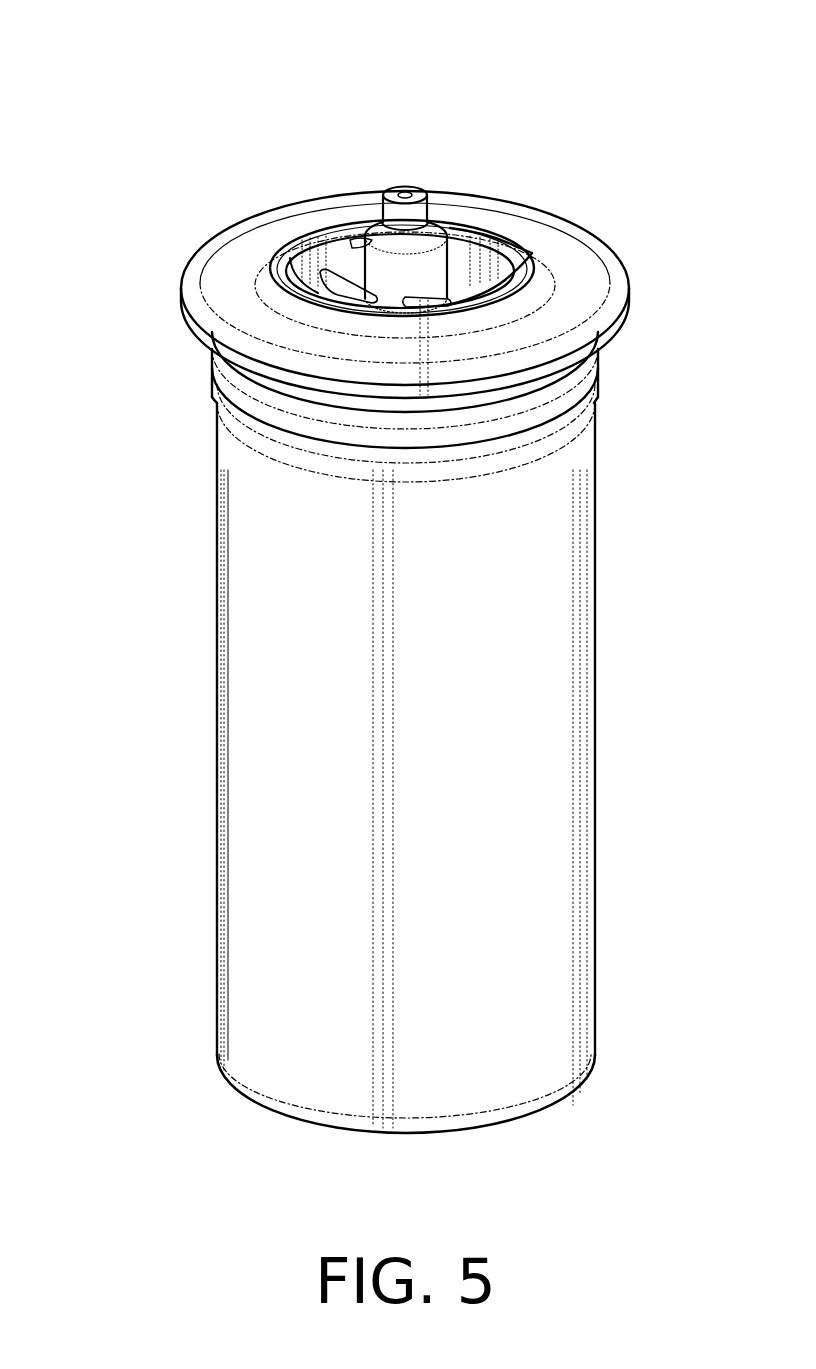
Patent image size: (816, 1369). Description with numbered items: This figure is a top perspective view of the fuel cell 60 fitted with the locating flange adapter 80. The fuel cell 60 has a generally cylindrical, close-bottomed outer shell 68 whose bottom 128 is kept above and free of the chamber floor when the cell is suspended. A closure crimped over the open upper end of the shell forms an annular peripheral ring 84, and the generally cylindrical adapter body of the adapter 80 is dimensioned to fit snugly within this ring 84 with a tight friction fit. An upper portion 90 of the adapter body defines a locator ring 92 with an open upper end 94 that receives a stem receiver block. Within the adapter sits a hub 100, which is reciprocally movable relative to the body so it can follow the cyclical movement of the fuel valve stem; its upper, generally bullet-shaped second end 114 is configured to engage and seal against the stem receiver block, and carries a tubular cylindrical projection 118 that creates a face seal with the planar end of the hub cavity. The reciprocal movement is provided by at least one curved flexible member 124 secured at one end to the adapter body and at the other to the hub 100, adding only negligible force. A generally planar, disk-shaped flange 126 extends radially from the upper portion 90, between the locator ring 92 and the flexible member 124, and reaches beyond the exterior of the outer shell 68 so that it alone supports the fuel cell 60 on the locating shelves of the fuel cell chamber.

The fuel cell 60 is at (176, 217).
The outer shell 68 is at (563, 782).
The adapter 80 is at (652, 262).
The annular peripheral ring 84 is at (603, 360).
The upper portion 90 is at (262, 262).
The locator ring 92 is at (320, 232).
The open upper end 94 is at (341, 245).
The hub 100 is at (427, 270).
The second end 114 is at (443, 228).
The projection 118 is at (404, 188).
The curved flexible member 124 is at (520, 254).
The flange 126 is at (233, 283).
The bottom 128 is at (550, 1100).